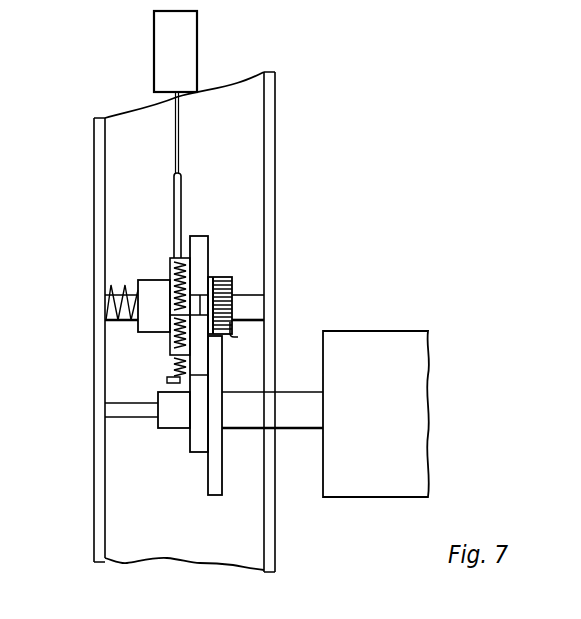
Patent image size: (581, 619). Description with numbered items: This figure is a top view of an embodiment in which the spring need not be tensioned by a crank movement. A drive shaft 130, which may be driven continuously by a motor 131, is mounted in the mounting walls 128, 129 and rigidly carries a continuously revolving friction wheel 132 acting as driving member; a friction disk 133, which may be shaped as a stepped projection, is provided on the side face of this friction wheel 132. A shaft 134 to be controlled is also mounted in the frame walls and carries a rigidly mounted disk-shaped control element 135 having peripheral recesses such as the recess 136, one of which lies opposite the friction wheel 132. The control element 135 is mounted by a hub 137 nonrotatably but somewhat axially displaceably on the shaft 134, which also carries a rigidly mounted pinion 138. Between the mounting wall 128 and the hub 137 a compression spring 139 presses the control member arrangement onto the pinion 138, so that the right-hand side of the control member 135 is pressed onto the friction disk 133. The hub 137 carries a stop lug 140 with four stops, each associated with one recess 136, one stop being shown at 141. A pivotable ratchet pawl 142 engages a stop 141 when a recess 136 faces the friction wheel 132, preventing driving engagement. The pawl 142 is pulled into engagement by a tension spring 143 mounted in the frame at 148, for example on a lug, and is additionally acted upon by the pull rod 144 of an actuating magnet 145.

The mounting wall 128 is at (95, 215).
The mounting wall 129 is at (267, 248).
The drive shaft 130 is at (242, 418).
The motor 131 is at (418, 372).
The friction wheel 132 is at (202, 435).
The friction disk 133 is at (215, 494).
The shaft to be controlled 134 is at (250, 303).
The disk-shaped control element 135 is at (197, 250).
The peripheral recess 136 is at (197, 305).
The hub 137 is at (158, 285).
The pinion 138 is at (234, 334).
The compression spring 139 is at (103, 321).
The stop lug 140 is at (170, 287).
The stop 141 is at (170, 333).
The ratchet pawl 142 is at (175, 208).
The tension spring 143 is at (168, 372).
The pull rod 144 is at (192, 128).
The actuating magnet 145 is at (158, 43).
The mounting point of tension spring 148 is at (168, 381).